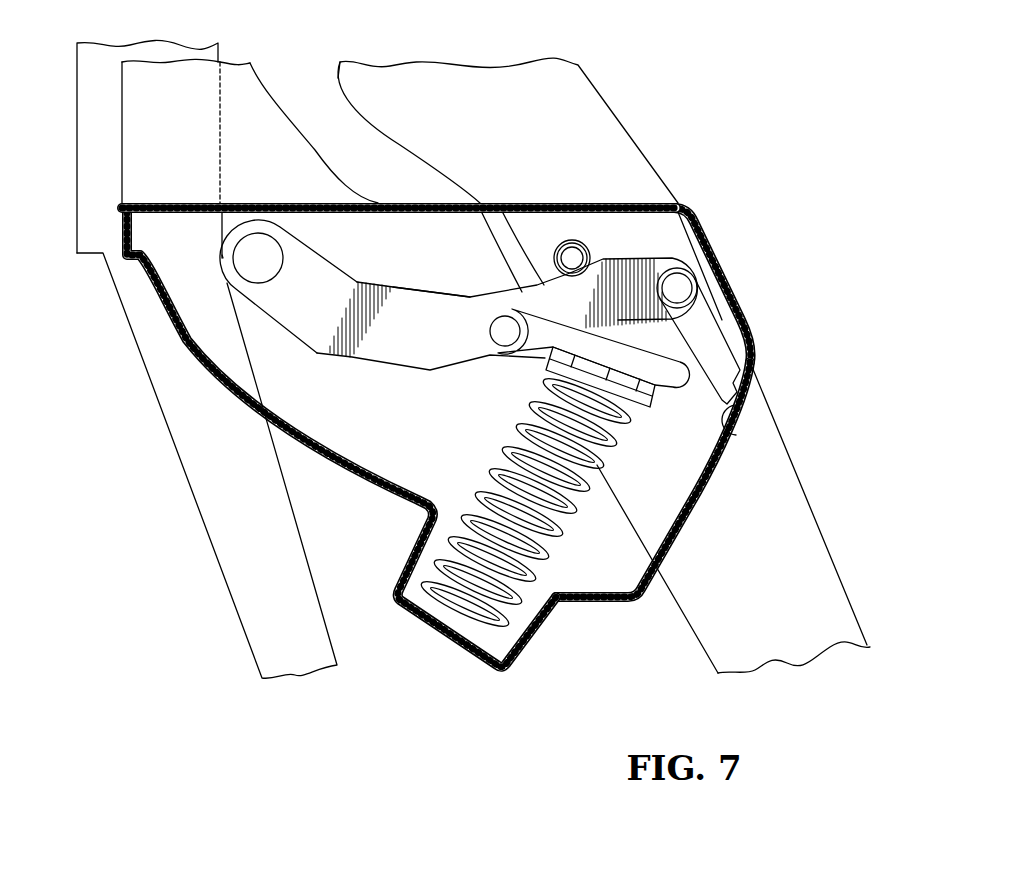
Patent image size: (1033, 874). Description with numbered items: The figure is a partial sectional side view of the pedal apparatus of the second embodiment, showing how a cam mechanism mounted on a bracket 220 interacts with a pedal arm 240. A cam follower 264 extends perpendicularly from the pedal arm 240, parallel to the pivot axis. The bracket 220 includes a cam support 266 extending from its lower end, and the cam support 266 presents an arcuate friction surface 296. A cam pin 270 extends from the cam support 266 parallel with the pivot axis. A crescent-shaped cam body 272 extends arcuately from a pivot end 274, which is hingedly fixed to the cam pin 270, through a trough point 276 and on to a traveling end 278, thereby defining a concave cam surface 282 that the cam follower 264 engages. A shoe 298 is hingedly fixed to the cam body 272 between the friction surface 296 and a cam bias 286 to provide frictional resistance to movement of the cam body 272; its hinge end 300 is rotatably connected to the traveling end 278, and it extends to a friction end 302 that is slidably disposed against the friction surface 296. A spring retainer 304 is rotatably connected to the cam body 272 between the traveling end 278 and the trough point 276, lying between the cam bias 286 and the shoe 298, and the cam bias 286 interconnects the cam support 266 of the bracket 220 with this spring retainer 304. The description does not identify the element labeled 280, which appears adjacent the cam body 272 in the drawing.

The bracket 220 is at (150, 398).
The pedal arm 240 is at (640, 121).
The cam follower 264 is at (575, 240).
The cam support 266 is at (440, 637).
The cam pin 270 is at (222, 254).
The cam body 272 is at (387, 352).
The pivot end 274 is at (242, 226).
The trough point 276 is at (505, 212).
The traveling end 278 is at (688, 265).
The lever arm 280 is at (412, 369).
The cam surface 282 is at (418, 288).
The cam bias 286 is at (567, 532).
The friction surface 296 is at (745, 433).
The shoe 298 is at (736, 342).
The hinge end 300 is at (698, 286).
The friction end 302 is at (731, 447).
The spring retainer 304 is at (688, 392).